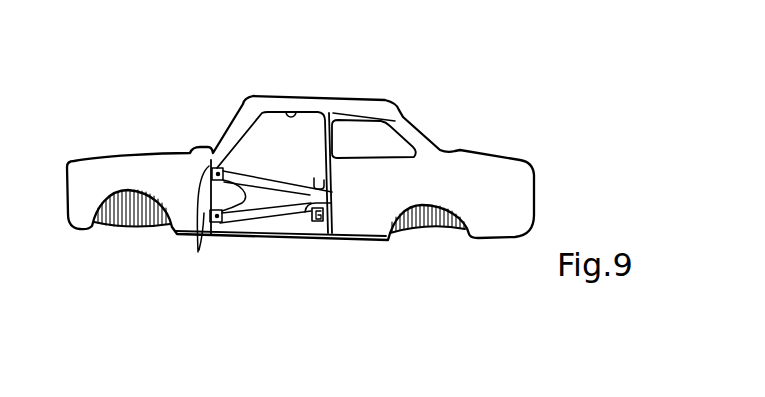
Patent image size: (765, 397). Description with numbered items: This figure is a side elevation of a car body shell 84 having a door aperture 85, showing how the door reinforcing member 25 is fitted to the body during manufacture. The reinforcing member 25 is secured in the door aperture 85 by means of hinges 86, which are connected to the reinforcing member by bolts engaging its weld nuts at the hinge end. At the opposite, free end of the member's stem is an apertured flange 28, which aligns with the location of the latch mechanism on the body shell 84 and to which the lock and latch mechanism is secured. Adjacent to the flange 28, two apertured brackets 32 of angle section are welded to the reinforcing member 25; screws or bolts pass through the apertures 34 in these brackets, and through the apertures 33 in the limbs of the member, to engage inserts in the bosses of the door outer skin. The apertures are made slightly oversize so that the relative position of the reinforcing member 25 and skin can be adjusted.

The car body shell 84 is at (483, 177).
The door aperture 85 is at (301, 117).
The hinges 86 is at (199, 223).
The reinforcing member 25 is at (270, 200).
The apertured flange 28 is at (305, 212).
The apertured brackets 32 is at (313, 181).
The apertures 33 is at (218, 214).
The apertures 34 is at (326, 208).